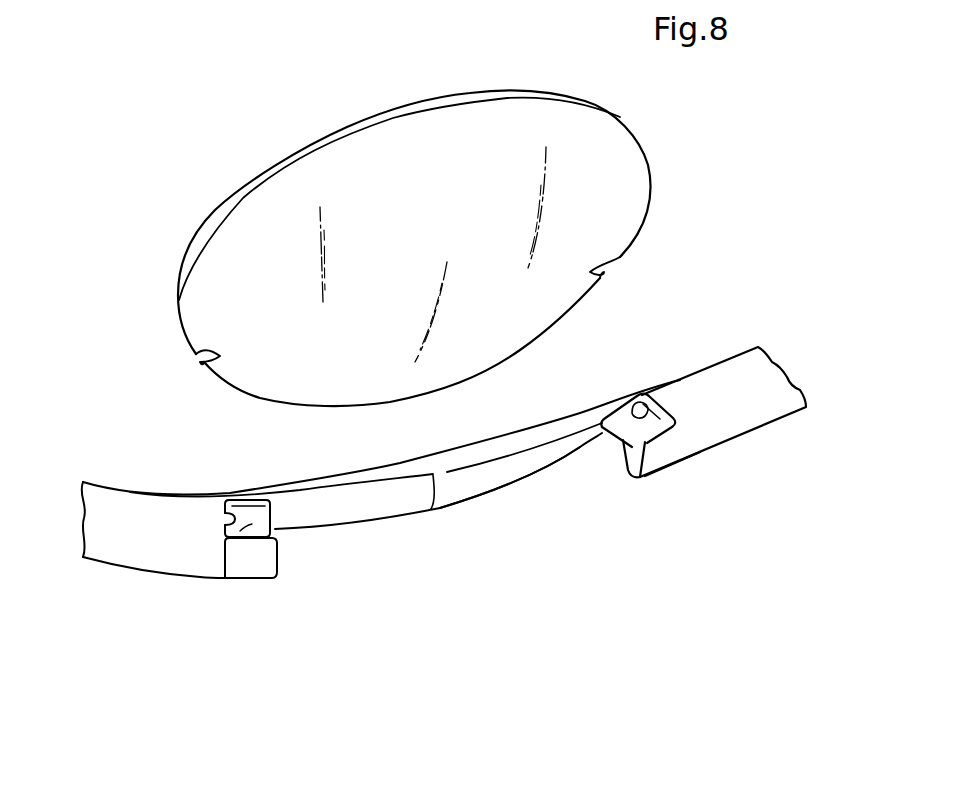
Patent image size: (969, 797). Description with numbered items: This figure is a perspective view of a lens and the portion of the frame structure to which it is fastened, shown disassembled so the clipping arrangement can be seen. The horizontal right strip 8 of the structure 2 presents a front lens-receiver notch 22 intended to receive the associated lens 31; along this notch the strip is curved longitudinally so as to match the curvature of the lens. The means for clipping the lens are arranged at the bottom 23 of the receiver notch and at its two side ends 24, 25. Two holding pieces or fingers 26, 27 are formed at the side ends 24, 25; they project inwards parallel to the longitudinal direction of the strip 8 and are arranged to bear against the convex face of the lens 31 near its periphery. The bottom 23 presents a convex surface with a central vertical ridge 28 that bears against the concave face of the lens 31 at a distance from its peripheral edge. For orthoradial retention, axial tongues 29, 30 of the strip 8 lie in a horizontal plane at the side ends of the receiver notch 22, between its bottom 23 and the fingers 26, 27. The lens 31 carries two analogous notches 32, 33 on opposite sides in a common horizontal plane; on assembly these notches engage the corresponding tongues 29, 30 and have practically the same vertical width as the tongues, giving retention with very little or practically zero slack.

The structure 2 is at (147, 580).
The right strip 8 is at (748, 419).
The front lens-receiver notch 22 is at (363, 533).
The bottom 23 is at (490, 487).
The side end 24 is at (232, 521).
The side end 25 is at (633, 416).
The holding piece or finger 26 is at (262, 562).
The holding piece or finger 27 is at (668, 463).
The central vertical ridge 28 is at (442, 509).
The axial tongue 29 is at (250, 524).
The axial tongue 30 is at (617, 442).
The lens 31 is at (258, 204).
The notch 32 is at (197, 358).
The notch 33 is at (613, 262).